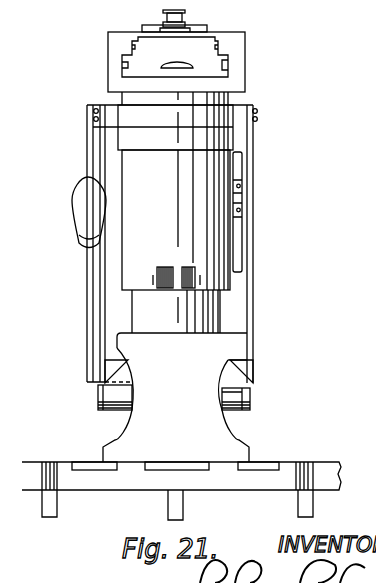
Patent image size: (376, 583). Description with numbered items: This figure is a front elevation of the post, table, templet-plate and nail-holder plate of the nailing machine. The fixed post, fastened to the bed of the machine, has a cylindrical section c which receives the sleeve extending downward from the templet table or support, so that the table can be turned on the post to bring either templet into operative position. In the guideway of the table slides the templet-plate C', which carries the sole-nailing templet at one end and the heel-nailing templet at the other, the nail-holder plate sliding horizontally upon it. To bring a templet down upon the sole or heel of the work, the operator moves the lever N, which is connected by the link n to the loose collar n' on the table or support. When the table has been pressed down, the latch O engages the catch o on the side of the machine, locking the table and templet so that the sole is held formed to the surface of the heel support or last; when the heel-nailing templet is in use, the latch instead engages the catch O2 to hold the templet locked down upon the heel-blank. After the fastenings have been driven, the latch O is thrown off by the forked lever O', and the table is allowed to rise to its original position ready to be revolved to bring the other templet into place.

The link n is at (82, 243).
The lever N is at (88, 288).
The latch O is at (165, 244).
The loose collar n' is at (175, 127).
The templet-plate C' is at (182, 220).
The cylindrical section of post c is at (176, 311).
The catch o is at (240, 348).
The catch O2 is at (100, 392).
The forked lever O' is at (179, 410).